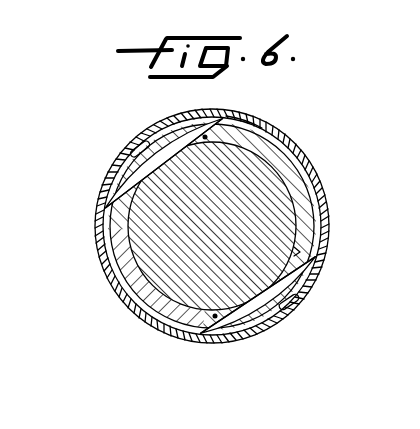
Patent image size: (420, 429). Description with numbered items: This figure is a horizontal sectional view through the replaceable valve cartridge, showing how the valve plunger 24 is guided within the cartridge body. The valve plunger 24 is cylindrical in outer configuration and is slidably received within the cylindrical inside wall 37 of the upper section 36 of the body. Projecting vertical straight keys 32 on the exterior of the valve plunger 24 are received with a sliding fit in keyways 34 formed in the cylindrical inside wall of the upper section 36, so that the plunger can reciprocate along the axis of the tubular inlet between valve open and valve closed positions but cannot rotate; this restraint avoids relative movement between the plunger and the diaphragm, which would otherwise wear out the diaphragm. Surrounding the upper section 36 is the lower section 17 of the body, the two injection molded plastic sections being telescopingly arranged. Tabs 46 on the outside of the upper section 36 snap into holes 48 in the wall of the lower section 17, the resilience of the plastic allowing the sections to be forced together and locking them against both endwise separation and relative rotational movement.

The lower section 17 is at (95, 221).
The valve plunger 24 is at (182, 290).
The keys 32 is at (237, 119).
The keyways 34 is at (205, 136).
The upper section 36 is at (310, 215).
The cylindrical inside wall 37 is at (303, 253).
The tabs 46 is at (130, 157).
The snap holes 48 is at (147, 142).